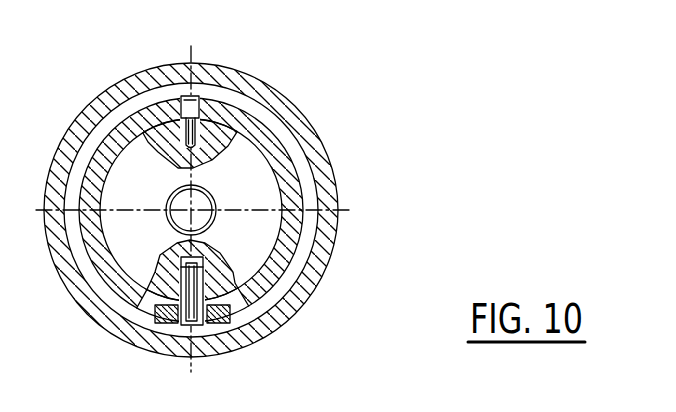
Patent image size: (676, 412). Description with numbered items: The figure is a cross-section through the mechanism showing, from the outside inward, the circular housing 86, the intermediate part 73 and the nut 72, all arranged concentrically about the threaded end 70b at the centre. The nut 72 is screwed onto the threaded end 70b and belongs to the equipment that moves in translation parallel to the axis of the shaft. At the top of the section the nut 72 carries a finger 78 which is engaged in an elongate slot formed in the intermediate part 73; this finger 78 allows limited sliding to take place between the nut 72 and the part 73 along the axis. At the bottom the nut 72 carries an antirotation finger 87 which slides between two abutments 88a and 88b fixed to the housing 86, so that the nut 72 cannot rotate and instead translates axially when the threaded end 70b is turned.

The threaded end 70b is at (207, 197).
The nut 72 is at (258, 234).
The intermediate part 73 is at (285, 176).
The finger 78 is at (197, 92).
The housing 86 is at (325, 192).
The antirotation finger 87 is at (185, 328).
The abutment 88a is at (222, 326).
The abutment 88b is at (155, 314).